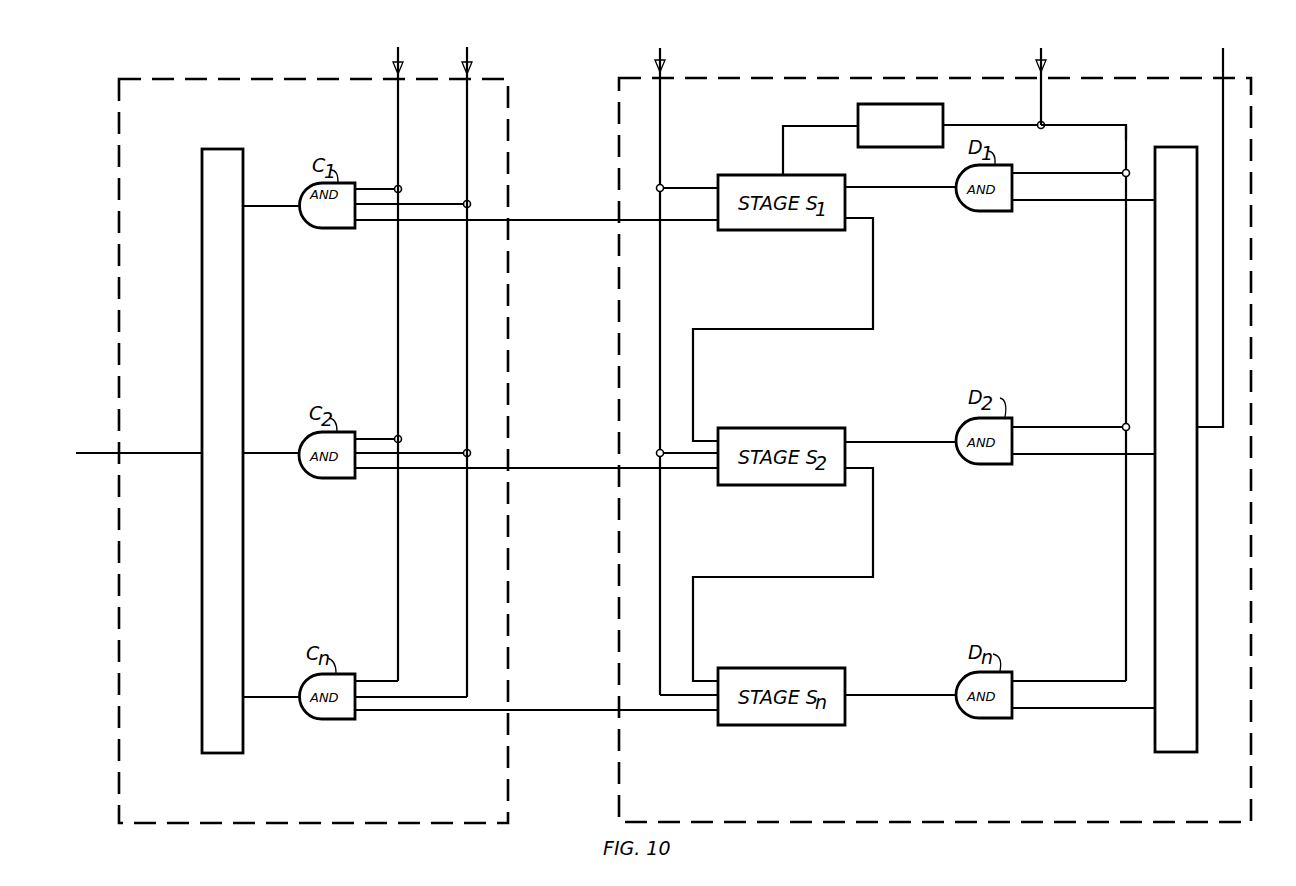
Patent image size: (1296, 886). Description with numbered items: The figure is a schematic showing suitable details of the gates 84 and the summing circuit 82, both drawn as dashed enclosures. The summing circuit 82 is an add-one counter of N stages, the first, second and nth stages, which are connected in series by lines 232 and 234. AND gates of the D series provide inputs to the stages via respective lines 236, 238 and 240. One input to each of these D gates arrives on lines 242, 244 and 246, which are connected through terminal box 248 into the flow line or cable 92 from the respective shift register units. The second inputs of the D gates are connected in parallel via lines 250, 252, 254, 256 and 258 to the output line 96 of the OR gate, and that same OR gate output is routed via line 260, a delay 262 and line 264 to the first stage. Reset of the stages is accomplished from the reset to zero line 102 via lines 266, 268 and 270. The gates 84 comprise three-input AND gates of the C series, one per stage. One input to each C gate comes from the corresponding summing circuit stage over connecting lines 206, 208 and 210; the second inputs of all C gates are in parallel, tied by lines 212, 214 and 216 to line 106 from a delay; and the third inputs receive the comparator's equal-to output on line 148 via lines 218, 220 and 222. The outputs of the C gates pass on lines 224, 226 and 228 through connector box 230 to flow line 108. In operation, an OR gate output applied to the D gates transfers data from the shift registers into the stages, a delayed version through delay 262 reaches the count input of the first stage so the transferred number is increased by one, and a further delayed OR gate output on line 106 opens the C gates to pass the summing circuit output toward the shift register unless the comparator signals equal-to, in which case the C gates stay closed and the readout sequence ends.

The summing circuit 82 is at (1254, 121).
The gates 84 is at (512, 119).
The flow line 92 is at (1225, 70).
The output line of the OR gate 96 is at (1043, 56).
The reset to zero line 102 is at (662, 56).
The line 106 is at (469, 58).
The flow line 108 is at (96, 456).
The line 148 is at (400, 58).
The connecting line 206 is at (554, 220).
The connecting line 208 is at (549, 468).
The connecting line 210 is at (551, 710).
The line 212 is at (439, 204).
The line 214 is at (425, 453).
The line 216 is at (466, 580).
The line 218 is at (373, 188).
The line 220 is at (374, 438).
The line 222 is at (397, 638).
The line 224 is at (271, 207).
The line 226 is at (270, 454).
The line 228 is at (270, 698).
The connector box 230 is at (244, 164).
The line 232 is at (874, 260).
The line 234 is at (874, 544).
The line 236 is at (876, 187).
The line 238 is at (885, 442).
The line 240 is at (882, 695).
The line 242 is at (1073, 200).
The line 244 is at (1070, 455).
The line 246 is at (1088, 709).
The terminal box 248 is at (1180, 147).
The line 250 is at (1070, 173).
The line 252 is at (1068, 427).
The line 254 is at (1125, 292).
The line 256 is at (1062, 681).
The line 258 is at (1072, 125).
The line 260 is at (974, 125).
The delay 262 is at (898, 104).
The line 264 is at (800, 126).
The line 266 is at (680, 188).
The line 268 is at (682, 454).
The line 270 is at (658, 643).